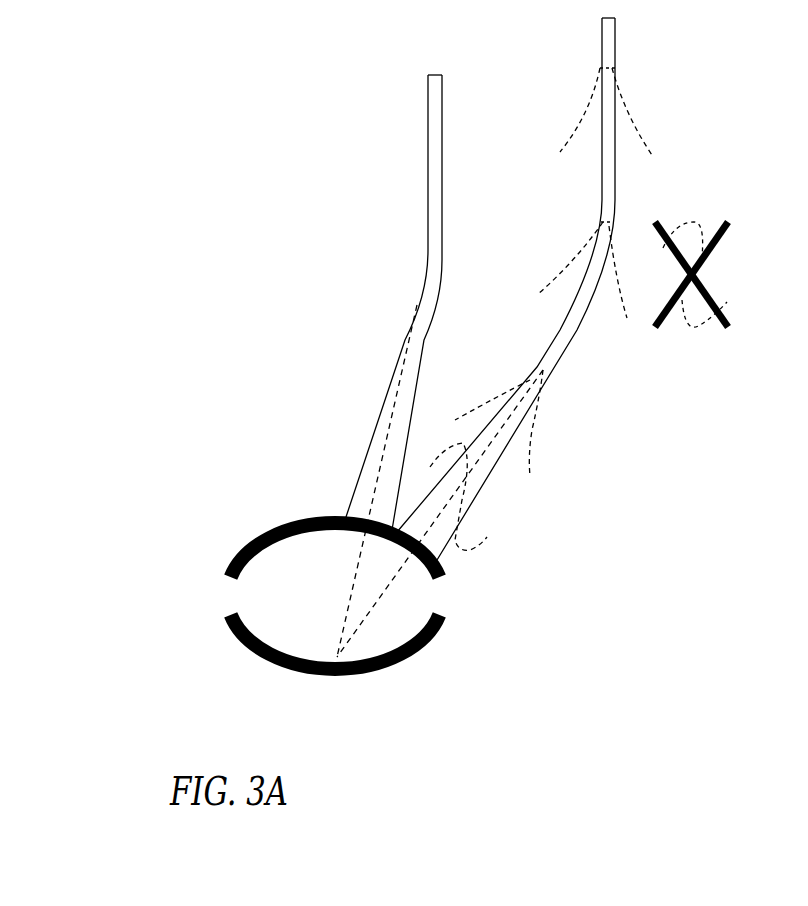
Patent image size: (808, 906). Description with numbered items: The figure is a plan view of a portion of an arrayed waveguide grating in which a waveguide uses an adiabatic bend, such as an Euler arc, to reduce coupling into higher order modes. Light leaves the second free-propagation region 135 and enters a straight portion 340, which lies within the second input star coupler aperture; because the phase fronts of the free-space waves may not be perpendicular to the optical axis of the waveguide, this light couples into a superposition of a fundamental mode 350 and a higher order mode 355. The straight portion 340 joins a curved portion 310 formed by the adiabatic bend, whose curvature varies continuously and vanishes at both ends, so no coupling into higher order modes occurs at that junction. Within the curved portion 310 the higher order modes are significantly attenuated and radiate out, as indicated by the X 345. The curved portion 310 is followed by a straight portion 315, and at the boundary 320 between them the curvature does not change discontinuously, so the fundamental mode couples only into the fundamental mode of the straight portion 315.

The second free-propagation region 135 is at (247, 497).
The curved portion 310 is at (568, 170).
The straight portion 315 is at (558, 32).
The boundary 320 is at (607, 164).
The straight portion 340 is at (567, 368).
The X 345 is at (726, 231).
The fundamental mode 350 is at (503, 385).
The higher order mode 355 is at (443, 441).